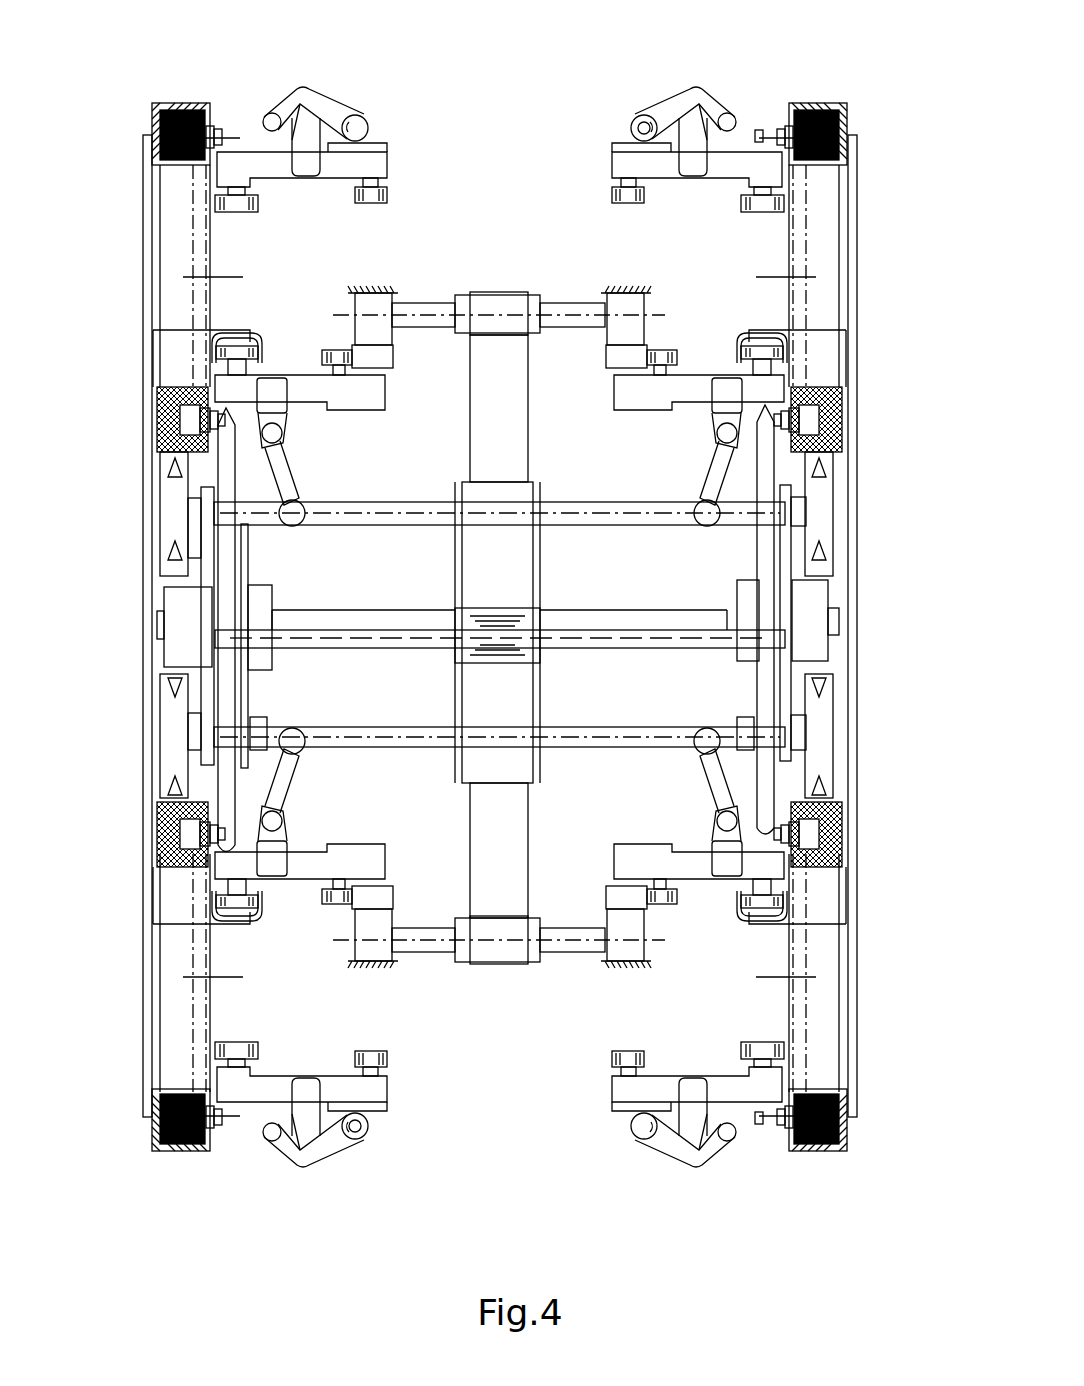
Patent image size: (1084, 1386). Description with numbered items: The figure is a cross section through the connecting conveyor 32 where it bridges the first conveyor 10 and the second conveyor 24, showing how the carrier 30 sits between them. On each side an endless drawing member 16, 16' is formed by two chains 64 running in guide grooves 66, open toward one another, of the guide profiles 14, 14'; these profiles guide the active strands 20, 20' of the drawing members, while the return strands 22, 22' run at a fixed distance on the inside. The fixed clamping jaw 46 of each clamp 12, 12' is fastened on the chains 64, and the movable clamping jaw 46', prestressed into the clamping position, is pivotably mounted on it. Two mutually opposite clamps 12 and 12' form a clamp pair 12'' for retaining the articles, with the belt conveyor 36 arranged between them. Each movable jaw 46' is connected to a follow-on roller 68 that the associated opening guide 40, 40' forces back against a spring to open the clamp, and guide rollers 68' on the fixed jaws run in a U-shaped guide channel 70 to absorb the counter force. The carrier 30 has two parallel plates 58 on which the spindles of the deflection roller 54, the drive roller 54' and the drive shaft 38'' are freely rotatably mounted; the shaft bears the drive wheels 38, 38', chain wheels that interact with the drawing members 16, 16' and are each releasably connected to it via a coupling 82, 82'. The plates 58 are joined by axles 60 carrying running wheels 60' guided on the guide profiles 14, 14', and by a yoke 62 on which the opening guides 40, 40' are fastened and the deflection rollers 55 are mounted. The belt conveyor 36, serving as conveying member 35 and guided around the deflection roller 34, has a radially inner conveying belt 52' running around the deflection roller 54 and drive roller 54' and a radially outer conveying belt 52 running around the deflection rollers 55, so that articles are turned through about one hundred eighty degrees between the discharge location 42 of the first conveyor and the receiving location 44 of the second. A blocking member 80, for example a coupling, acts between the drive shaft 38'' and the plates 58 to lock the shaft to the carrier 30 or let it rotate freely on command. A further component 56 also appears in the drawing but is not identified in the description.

The first conveyor 10 is at (870, 1012).
The clamps 12 is at (499, 1104).
The clamps 12' is at (499, 149).
The clamp pair 12'' is at (480, 637).
The guide profile 14 is at (886, 812).
The guide profile 14' is at (894, 105).
The endless drawing member 16 is at (761, 1160).
The endless drawing member 16' is at (752, 82).
The active strand 20 is at (848, 849).
The active strand 20' is at (862, 404).
The return strand 22 is at (854, 1113).
The return strand 22' is at (830, 93).
The second conveyor 24 is at (865, 222).
The carrier 30 is at (198, 697).
The connecting conveyor 32 is at (478, 280).
The deflection roller 34 is at (540, 568).
The conveying member 35 is at (510, 292).
The belt conveyor 36 is at (452, 490).
The drive wheel 38 is at (147, 626).
The drive wheel 38' is at (739, 623).
The drive shaft 38'' is at (642, 596).
The opening guide 40 is at (538, 896).
The opening guide 40' is at (499, 363).
The discharge location 42 is at (785, 830).
The receiving location 44 is at (832, 470).
The fixed clamping jaw 46 is at (499, 627).
The movable clamping jaw 46' is at (499, 627).
The conveying belt 52 is at (532, 626).
The conveying belt 52' is at (431, 551).
The deflection roller 54 is at (498, 586).
The drive roller 54' is at (588, 700).
The deflection rollers 55 is at (537, 312).
The inner vertical bar 56 is at (248, 684).
The plates 58 is at (790, 556).
The axles 60 is at (499, 656).
The running wheels 60' is at (499, 625).
The yoke 62 is at (383, 292).
The chains 64 is at (782, 128).
The guide grooves 66 is at (200, 103).
The follow-on roller 68 is at (417, 561).
The guide rollers 68' is at (499, 593).
The guide channel 70 is at (245, 335).
The blocking member 80 is at (815, 605).
The coupling 82 is at (278, 601).
The coupling 82' is at (723, 665).